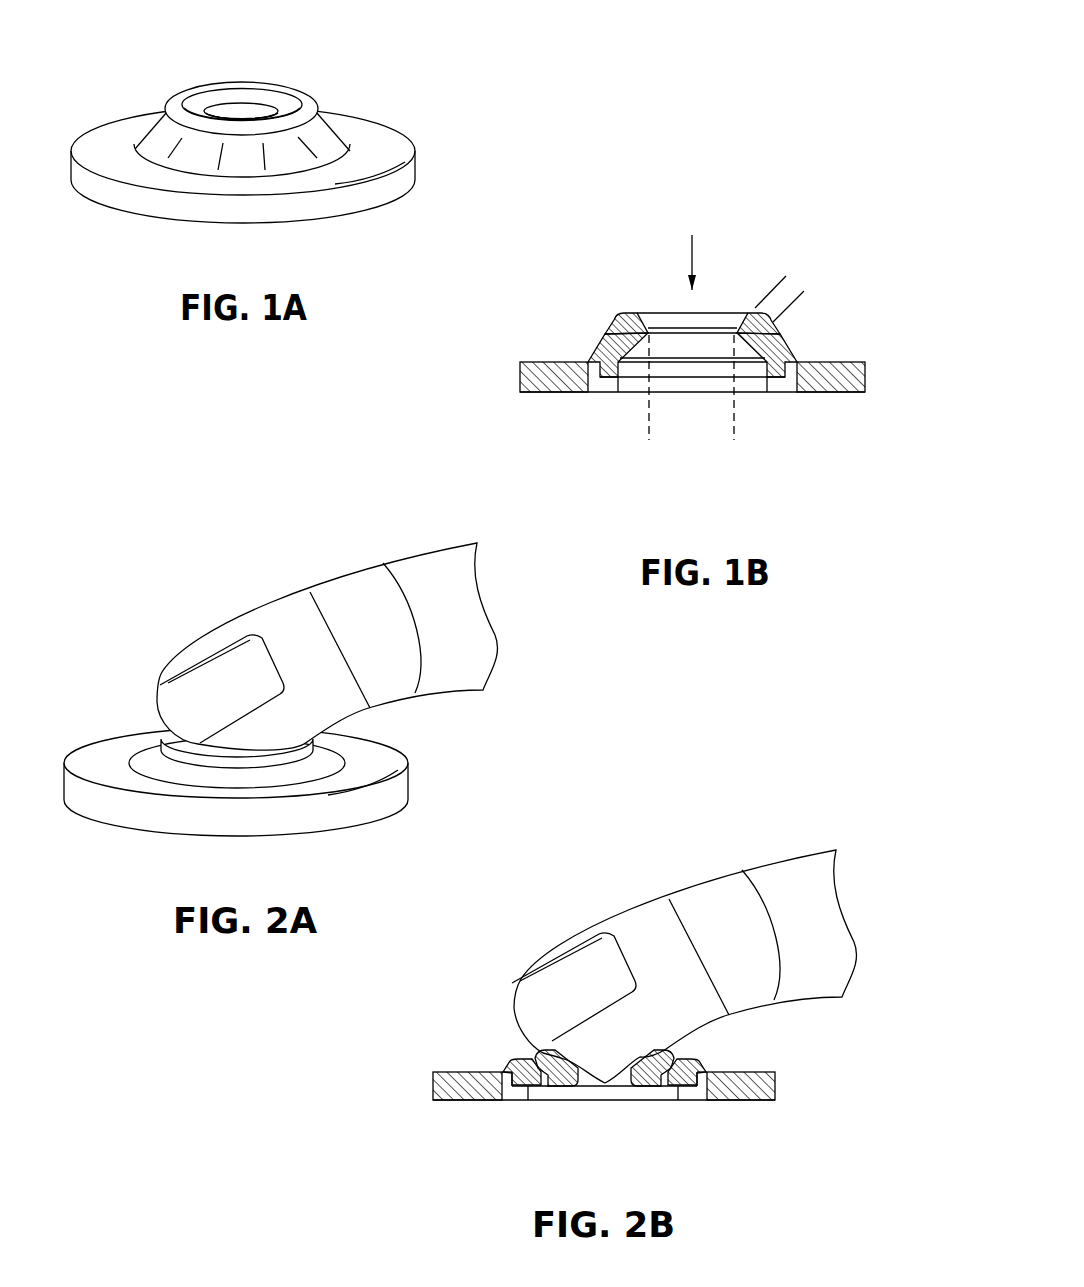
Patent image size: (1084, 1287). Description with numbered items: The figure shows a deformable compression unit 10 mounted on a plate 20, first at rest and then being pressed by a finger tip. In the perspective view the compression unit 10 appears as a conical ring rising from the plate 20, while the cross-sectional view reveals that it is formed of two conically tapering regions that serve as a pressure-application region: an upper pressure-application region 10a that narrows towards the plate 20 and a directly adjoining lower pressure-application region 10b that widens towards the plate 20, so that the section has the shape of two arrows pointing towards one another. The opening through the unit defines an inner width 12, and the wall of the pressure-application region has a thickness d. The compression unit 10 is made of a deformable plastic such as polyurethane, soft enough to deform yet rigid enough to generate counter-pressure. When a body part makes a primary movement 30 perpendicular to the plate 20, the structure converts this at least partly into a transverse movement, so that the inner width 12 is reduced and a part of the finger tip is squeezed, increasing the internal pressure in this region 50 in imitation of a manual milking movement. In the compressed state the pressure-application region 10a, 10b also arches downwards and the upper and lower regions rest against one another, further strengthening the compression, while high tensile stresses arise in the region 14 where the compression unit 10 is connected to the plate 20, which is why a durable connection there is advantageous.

In FIG. 1A, the compression unit 10 is at (323, 90).
In FIG. 1A, the plate 20 is at (123, 202).
In FIG. 1B, the plate 20 is at (835, 393).
In FIG. 2B, the plate 20 is at (604, 1086).
In FIG. 1B, the primary movement 30 is at (692, 249).
In FIG. 1B, the upper pressure-application region 10a is at (595, 334).
In FIG. 1B, the lower pressure-application region 10b is at (577, 355).
In FIG. 1B, the inner width 12 is at (649, 447).
In FIG. 1B, the thickness d is at (755, 260).
In FIG. 2B, the connection region 14 is at (491, 1057).
In FIG. 2B, the squeezed finger tip region 50 is at (604, 1072).